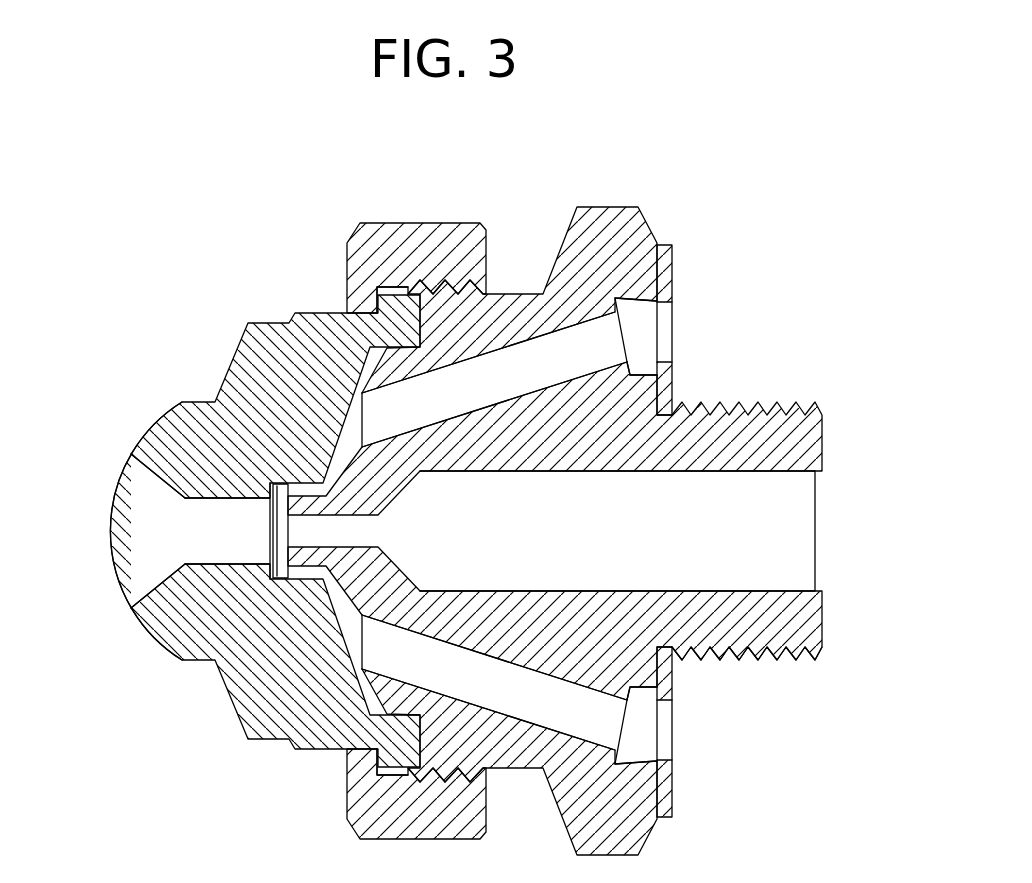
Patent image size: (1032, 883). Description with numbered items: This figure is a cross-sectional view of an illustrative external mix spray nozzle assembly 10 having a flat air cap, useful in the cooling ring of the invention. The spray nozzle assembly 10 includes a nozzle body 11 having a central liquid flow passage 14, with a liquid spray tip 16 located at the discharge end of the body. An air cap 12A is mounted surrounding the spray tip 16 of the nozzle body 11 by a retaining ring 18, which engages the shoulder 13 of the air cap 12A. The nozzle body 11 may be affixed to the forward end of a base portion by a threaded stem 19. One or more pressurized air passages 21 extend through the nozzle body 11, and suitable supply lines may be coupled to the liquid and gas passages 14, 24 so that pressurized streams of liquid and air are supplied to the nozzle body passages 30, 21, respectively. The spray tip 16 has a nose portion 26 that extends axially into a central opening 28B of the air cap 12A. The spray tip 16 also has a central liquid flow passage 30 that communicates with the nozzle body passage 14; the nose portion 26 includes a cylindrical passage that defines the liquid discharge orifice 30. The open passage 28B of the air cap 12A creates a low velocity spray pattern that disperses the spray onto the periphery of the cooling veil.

The spray nozzle assembly 10 is at (766, 244).
The nozzle body 11 is at (800, 437).
The air cap 12A is at (242, 364).
The shoulder 13 is at (395, 308).
The central liquid flow passage 14 is at (792, 535).
The liquid spray tip 16 is at (352, 480).
The retaining ring 18 is at (418, 222).
The threaded stem 19 is at (753, 648).
The pressurized air passage 21 is at (528, 355).
The gas passage 24 is at (645, 330).
The nose portion 26 is at (300, 500).
The central opening 28B is at (131, 556).
The liquid discharge orifice 30 is at (283, 531).